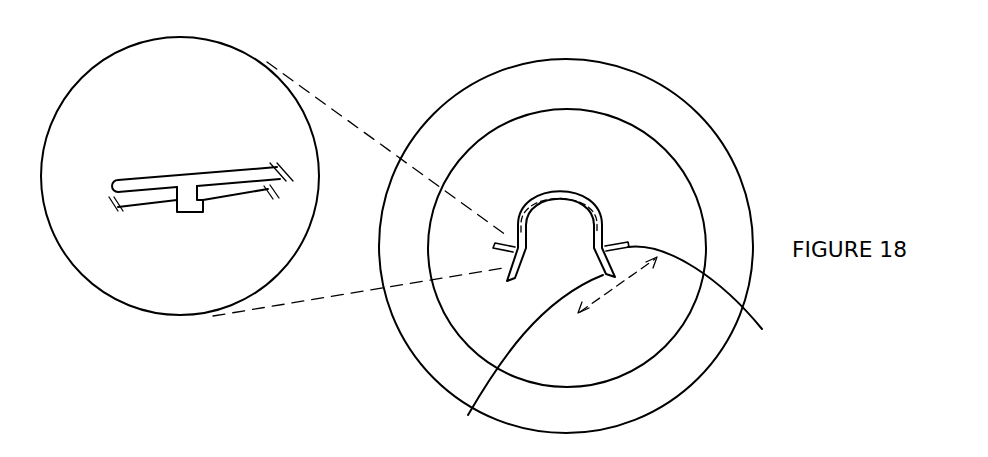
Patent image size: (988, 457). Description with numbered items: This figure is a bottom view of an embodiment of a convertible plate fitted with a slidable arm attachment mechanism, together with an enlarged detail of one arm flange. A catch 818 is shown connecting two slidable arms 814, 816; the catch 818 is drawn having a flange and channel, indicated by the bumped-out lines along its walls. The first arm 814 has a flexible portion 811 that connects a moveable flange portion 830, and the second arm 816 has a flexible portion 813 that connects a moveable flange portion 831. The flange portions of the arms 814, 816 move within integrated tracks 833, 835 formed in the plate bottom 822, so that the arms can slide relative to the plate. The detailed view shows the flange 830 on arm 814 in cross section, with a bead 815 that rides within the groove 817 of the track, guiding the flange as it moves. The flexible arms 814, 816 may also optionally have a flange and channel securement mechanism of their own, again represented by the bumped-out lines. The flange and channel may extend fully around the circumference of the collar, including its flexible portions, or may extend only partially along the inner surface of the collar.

The flexible portion 811 is at (513, 233).
The flexible portion 813 is at (598, 198).
The slidable arm 814 is at (213, 173).
The bead 815 is at (188, 197).
The slidable arm 816 is at (632, 243).
The groove 817 is at (177, 213).
The catch 818 is at (560, 195).
The plate bottom 822 is at (628, 330).
The moveable flange portion 830 is at (123, 182).
The moveable flange portion 831 is at (525, 362).
The integrated track 833 is at (495, 248).
The integrated track 835 is at (715, 296).